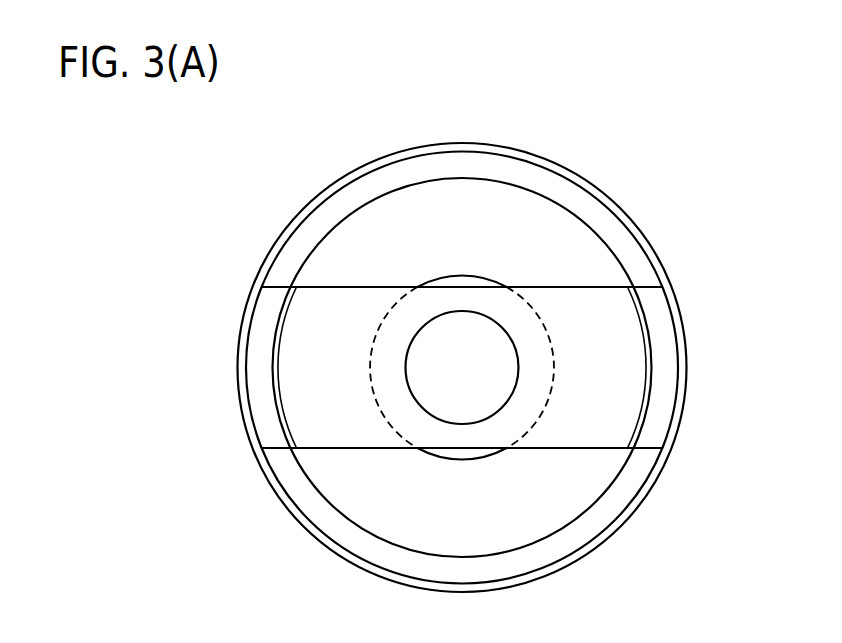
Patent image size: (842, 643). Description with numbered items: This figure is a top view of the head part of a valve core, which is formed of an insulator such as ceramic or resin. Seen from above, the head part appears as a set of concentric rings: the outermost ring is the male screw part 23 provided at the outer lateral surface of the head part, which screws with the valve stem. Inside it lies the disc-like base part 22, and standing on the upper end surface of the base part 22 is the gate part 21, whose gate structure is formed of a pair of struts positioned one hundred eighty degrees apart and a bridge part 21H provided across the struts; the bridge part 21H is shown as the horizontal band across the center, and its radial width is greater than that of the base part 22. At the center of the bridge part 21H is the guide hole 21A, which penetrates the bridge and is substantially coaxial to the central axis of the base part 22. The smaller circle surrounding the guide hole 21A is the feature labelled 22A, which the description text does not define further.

The gate part 21 is at (575, 335).
The guide hole 21A is at (503, 327).
The bridge part 21H is at (575, 430).
The base part 22 is at (518, 210).
The boss portion 22A is at (458, 275).
The male screw part 23 is at (625, 223).